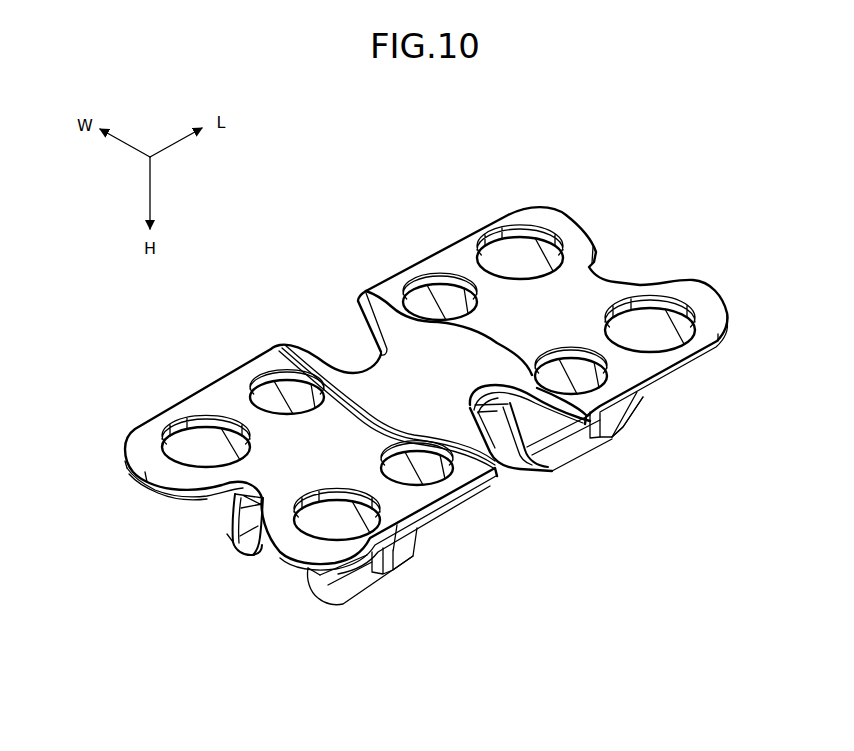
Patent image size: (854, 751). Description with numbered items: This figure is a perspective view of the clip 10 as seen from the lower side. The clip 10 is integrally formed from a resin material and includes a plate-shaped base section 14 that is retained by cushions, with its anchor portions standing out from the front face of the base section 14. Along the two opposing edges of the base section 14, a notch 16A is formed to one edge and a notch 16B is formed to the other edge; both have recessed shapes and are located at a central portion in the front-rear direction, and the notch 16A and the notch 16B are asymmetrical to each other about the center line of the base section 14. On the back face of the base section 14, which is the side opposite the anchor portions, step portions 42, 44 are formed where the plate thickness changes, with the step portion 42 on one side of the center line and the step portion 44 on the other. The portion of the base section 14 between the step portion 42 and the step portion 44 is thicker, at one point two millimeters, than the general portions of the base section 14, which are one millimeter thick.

The clip 10 is at (595, 142).
The base section 14 is at (597, 210).
The notch 16A is at (500, 460).
The notch 16B is at (358, 327).
The step portion 42 is at (523, 354).
The step portion 44 is at (357, 421).